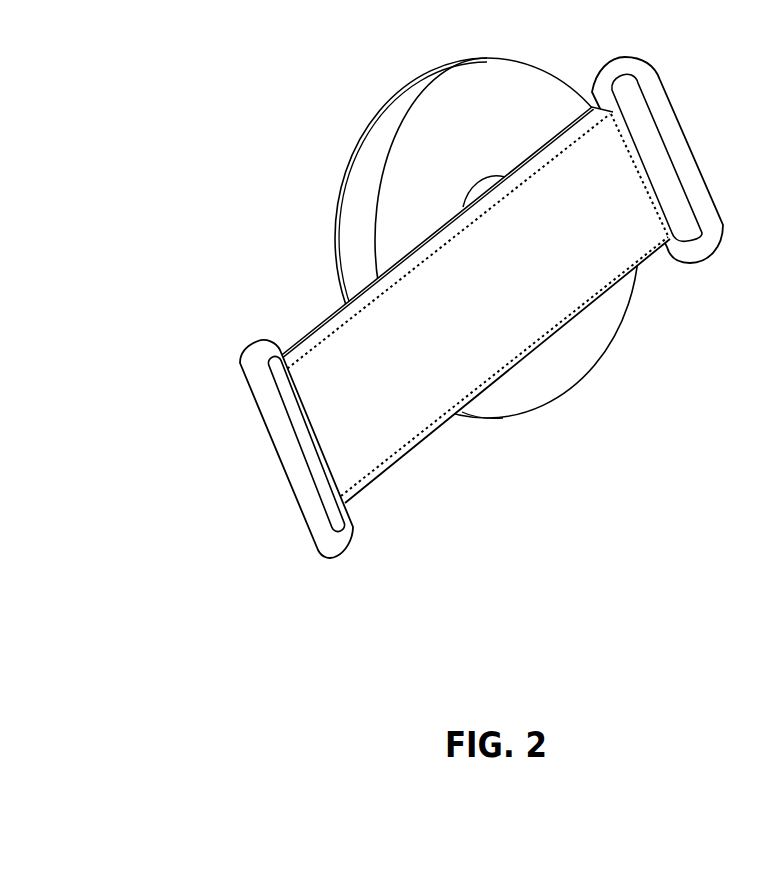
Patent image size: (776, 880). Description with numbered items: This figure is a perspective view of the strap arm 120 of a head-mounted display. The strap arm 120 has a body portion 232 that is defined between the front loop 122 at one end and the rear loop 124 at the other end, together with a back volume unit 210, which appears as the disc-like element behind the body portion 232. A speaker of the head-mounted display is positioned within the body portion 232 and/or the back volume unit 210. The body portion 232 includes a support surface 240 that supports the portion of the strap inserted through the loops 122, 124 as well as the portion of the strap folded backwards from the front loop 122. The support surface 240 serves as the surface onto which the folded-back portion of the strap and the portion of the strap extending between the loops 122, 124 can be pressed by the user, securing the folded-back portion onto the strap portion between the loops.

The strap arm 120 is at (455, 296).
The front loop 122 is at (678, 133).
The rear loop 124 is at (313, 507).
The back volume unit 210 is at (380, 140).
The body portion 232 is at (553, 273).
The support surface 240 is at (360, 437).